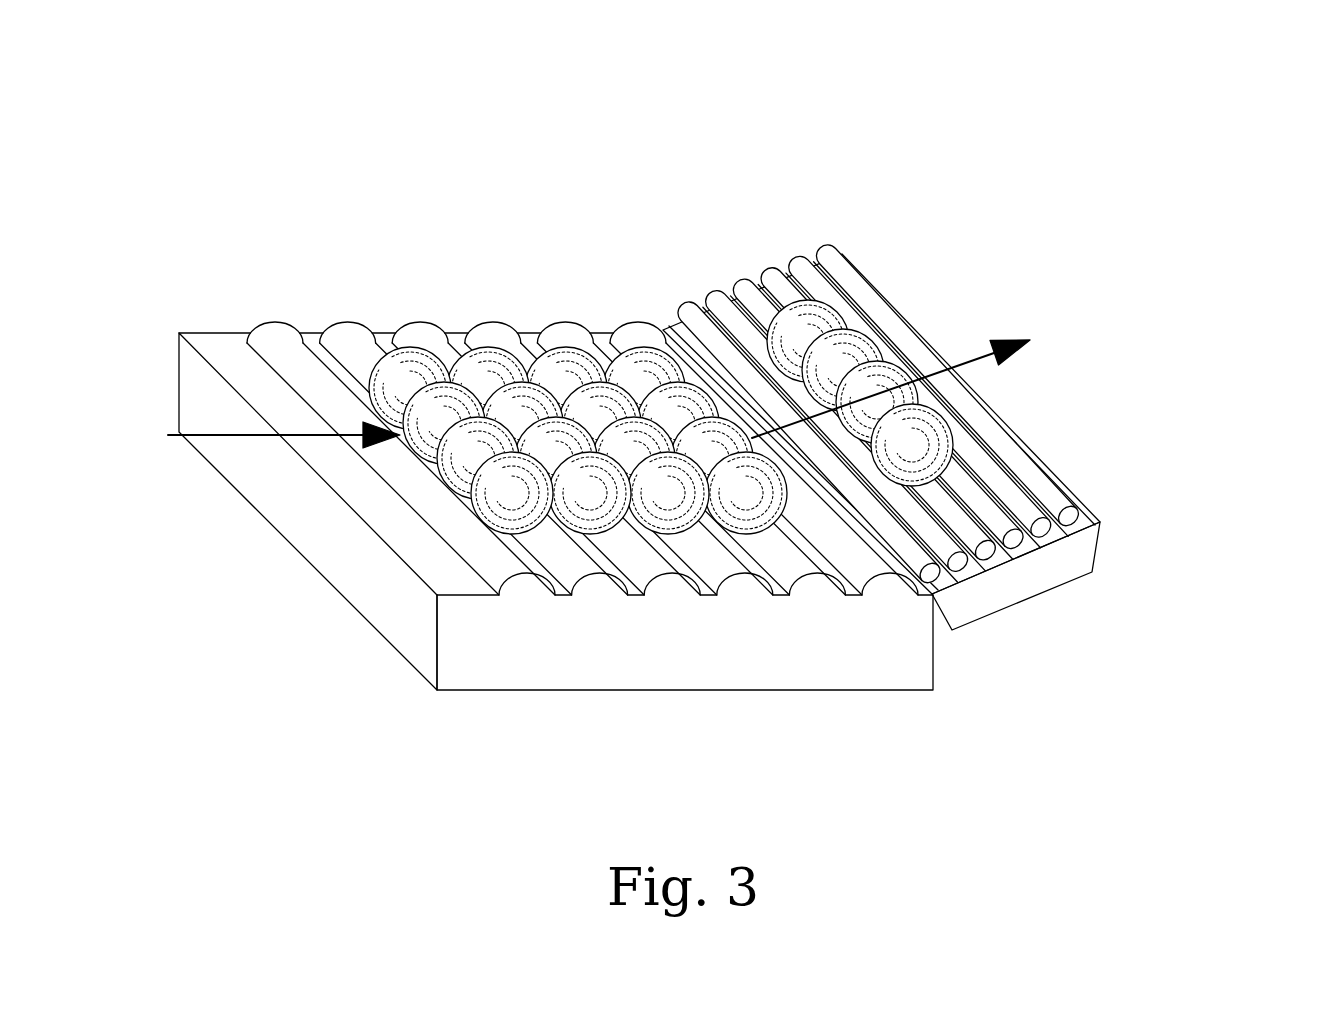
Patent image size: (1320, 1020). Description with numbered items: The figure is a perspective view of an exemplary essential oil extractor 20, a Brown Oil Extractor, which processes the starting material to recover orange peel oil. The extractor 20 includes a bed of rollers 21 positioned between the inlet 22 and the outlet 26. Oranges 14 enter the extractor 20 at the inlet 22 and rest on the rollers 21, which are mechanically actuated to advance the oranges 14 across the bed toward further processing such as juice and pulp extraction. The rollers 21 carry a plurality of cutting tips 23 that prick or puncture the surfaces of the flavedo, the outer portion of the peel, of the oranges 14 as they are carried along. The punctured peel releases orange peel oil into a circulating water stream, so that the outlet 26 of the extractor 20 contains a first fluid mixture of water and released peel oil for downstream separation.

The essential oil extractor 20 is at (703, 384).
The bed of rollers 21 is at (920, 659).
The inlet 22 is at (265, 437).
The cutting tips 23 is at (348, 325).
The oranges 14 is at (600, 415).
The outlet 26 is at (909, 382).